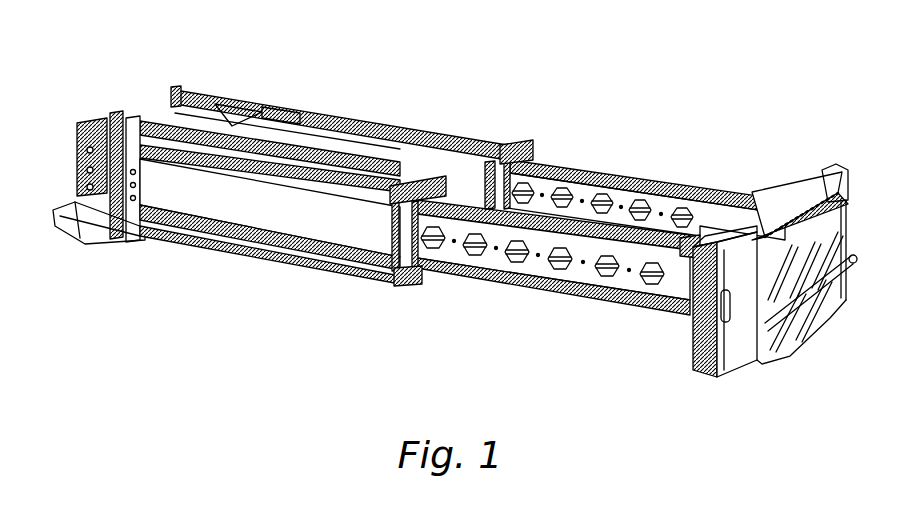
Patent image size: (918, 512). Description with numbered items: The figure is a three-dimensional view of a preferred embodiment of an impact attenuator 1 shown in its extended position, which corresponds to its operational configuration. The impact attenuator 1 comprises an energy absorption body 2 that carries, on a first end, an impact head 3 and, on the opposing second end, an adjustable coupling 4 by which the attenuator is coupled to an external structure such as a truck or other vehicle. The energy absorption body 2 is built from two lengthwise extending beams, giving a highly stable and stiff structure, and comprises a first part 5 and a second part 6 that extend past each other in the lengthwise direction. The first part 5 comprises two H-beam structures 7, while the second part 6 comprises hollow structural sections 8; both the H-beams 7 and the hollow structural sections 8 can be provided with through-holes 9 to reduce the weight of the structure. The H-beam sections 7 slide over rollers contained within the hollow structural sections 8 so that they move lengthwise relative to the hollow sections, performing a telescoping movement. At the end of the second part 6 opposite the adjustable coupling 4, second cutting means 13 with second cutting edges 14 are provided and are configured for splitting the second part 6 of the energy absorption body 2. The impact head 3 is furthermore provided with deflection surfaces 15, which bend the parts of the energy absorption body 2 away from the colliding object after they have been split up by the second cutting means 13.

The impact attenuator 1 is at (455, 221).
The energy absorption body 2 is at (373, 238).
The impact head 3 is at (807, 262).
The adjustable coupling 4 is at (86, 164).
The first part 5 is at (532, 296).
The second part 6 is at (251, 187).
The H-beam structure 7 is at (578, 227).
The hollow structural section 8 is at (340, 142).
The through-hole 9 is at (593, 292).
The second cutting means 13 is at (492, 191).
The second cutting edge 14 is at (441, 178).
The deflection surface 15 is at (718, 238).